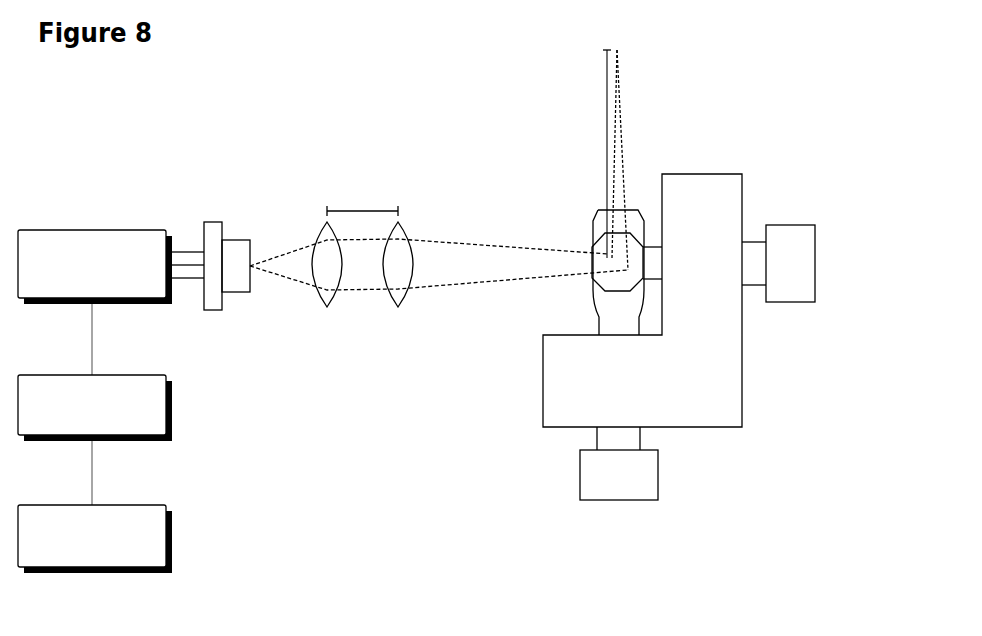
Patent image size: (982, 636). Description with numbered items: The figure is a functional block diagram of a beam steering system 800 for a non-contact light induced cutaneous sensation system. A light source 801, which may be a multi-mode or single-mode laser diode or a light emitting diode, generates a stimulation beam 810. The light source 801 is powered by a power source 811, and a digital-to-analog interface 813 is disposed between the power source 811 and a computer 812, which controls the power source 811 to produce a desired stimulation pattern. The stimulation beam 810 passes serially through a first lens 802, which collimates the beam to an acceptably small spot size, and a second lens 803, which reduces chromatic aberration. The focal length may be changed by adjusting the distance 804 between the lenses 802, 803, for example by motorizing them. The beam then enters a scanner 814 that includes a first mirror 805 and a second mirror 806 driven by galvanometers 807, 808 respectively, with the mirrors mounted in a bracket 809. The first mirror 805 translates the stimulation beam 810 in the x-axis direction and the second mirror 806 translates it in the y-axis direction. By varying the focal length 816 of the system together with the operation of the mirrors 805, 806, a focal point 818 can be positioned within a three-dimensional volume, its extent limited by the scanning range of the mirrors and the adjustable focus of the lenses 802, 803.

The beam steering system 800 is at (333, 105).
The light source 801 is at (211, 222).
The first lens 802 is at (327, 307).
The second lens 803 is at (398, 307).
The distance between the lenses 804 is at (355, 211).
The first mirror 805 is at (600, 280).
The second mirror 806 is at (637, 212).
The galvanometer 807 is at (638, 488).
The galvanometer 808 is at (809, 274).
The bracket 809 is at (699, 394).
The stimulation beam 810 is at (470, 241).
The power source 811 is at (110, 290).
The computer 812 is at (110, 564).
The digital-to-analog interface 813 is at (110, 430).
The scanner 814 is at (697, 140).
The focal length 816 is at (607, 145).
The focal point 818 is at (617, 50).